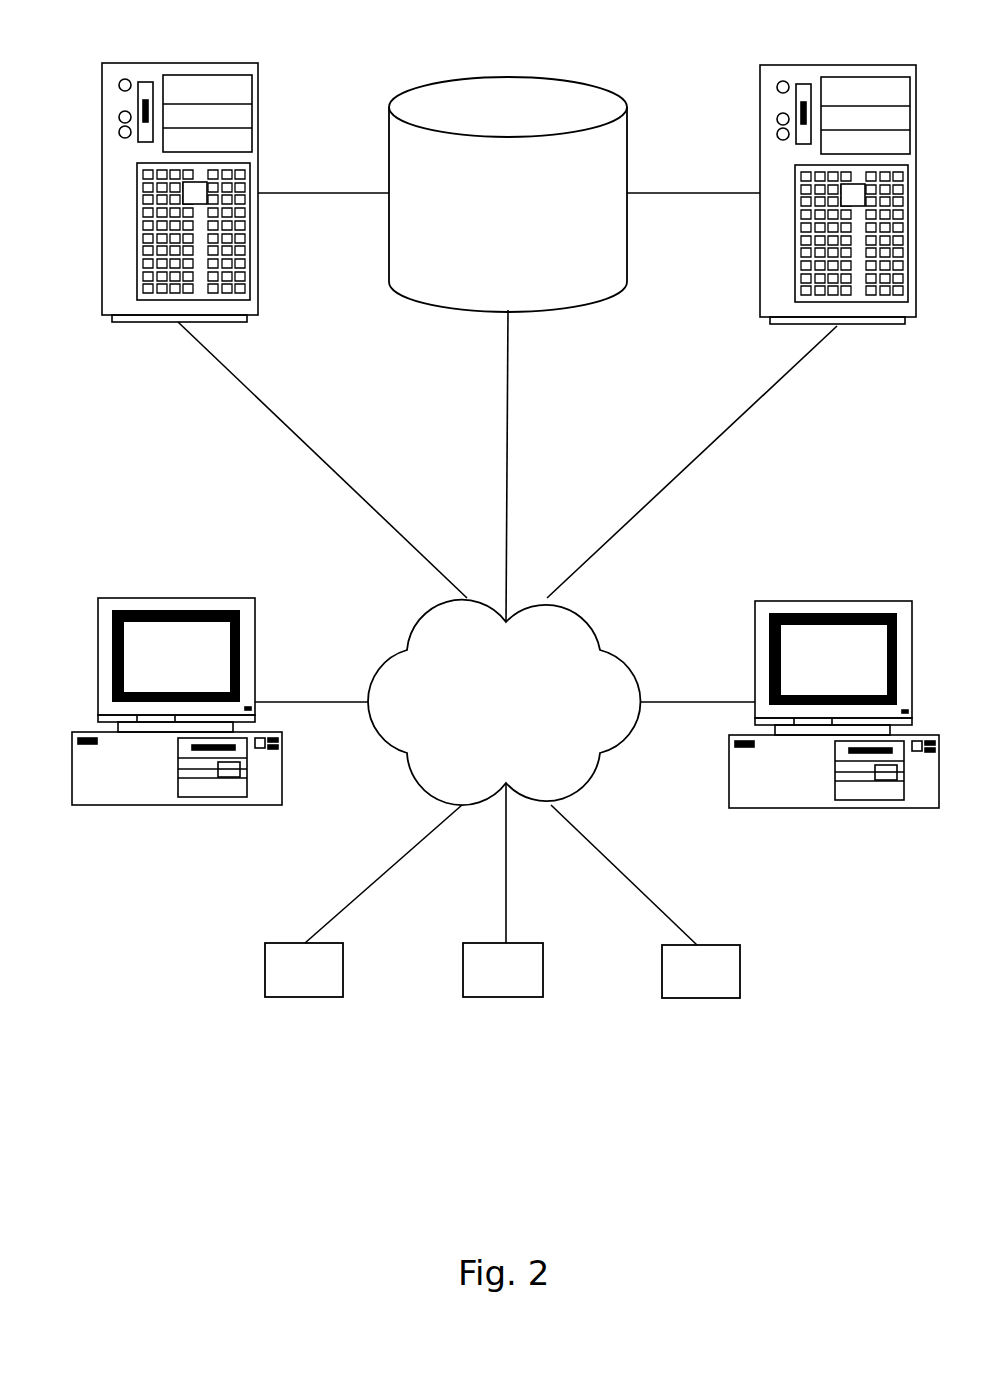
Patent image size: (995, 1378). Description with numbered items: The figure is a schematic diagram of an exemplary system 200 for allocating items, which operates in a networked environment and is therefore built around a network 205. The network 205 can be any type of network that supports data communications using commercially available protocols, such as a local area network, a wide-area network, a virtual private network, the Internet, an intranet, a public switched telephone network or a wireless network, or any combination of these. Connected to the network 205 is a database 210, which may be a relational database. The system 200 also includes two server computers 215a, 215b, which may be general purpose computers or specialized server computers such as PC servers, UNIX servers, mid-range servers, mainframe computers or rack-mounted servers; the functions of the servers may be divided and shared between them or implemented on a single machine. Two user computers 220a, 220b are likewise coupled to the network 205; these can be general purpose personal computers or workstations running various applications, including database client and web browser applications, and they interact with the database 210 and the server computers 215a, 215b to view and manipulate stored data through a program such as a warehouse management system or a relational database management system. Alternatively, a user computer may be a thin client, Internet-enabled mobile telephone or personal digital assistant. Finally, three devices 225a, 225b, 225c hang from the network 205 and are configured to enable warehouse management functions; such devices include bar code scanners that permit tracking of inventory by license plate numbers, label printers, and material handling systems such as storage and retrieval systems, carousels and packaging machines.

The system 200 is at (860, 1112).
The network 205 is at (585, 782).
The database 210 is at (508, 77).
The server computer 215a is at (143, 322).
The server computer 215b is at (865, 326).
The user computer 220a is at (175, 805).
The user computer 220b is at (833, 808).
The device 225a is at (303, 997).
The device 225b is at (503, 997).
The device 225c is at (700, 998).